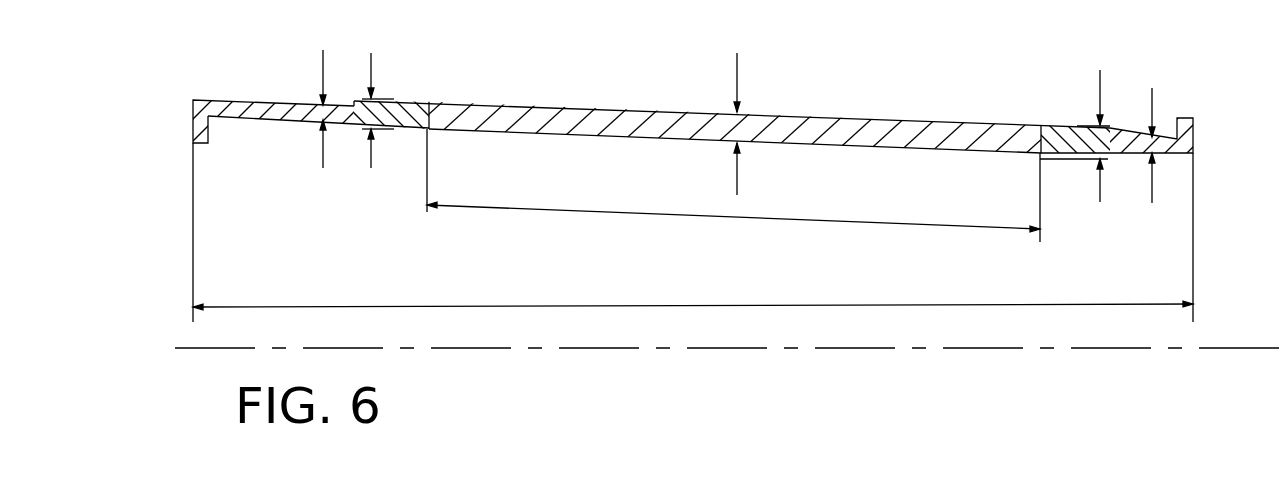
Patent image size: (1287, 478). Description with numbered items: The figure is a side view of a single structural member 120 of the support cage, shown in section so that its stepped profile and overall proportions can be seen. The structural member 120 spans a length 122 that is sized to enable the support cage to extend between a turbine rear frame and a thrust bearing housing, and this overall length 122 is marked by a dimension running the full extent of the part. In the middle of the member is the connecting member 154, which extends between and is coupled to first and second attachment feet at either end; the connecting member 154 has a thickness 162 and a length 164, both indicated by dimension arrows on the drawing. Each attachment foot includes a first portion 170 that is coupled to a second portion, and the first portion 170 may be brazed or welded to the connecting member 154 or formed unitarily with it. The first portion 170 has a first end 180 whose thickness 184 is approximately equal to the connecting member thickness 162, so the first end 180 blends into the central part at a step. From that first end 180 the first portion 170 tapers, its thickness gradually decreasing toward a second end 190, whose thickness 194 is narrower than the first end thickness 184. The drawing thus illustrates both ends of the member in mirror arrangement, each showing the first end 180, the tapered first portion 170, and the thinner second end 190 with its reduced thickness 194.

The structural member 120 is at (701, 123).
The length 122 is at (717, 305).
The connecting member 154 is at (592, 144).
The thickness 162 is at (740, 56).
The length 164 is at (667, 216).
The first portion 170 is at (344, 103).
The first end 180 is at (454, 101).
The thickness 184 is at (371, 168).
The second end 190 is at (307, 105).
The thickness 194 is at (322, 65).